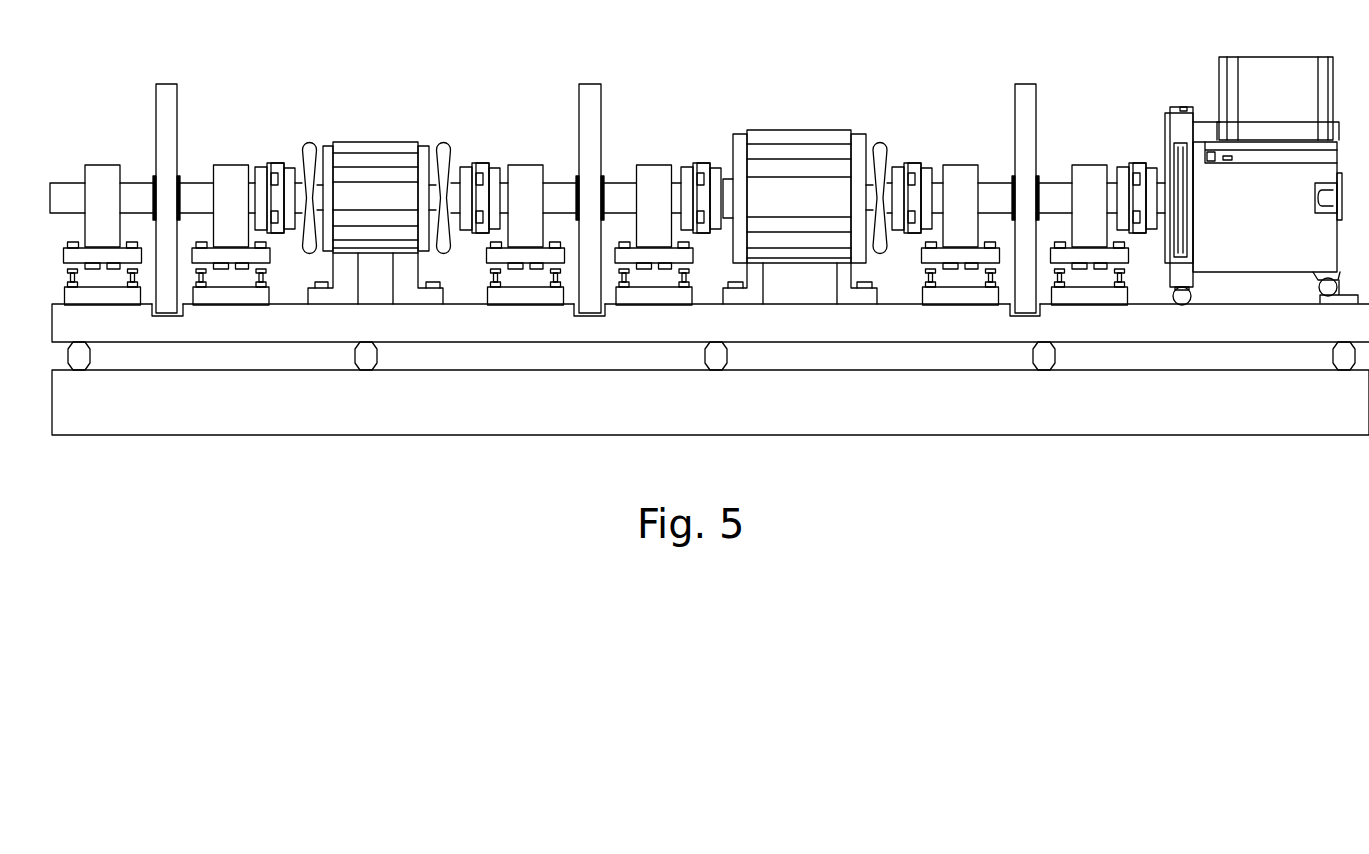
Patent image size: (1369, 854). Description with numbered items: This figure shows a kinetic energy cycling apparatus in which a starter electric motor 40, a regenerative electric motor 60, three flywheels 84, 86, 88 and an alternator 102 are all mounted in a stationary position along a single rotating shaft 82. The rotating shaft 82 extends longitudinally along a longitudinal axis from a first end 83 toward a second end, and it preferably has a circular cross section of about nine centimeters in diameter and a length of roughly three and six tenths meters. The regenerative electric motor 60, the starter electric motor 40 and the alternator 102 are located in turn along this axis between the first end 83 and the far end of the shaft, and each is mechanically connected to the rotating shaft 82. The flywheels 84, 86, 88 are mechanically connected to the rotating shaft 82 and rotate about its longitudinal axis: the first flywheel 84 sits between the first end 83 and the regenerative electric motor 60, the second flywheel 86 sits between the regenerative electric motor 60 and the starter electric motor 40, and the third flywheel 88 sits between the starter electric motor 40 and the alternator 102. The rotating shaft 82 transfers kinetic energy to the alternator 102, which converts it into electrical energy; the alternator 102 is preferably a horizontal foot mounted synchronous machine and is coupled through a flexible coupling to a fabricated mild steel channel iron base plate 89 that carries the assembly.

The starter electric motor 40 is at (793, 142).
The regenerative electric motor 60 is at (367, 153).
The rotating shaft 82 is at (560, 192).
The first end 83 is at (70, 202).
The first flywheel 84 is at (165, 112).
The second flywheel 86 is at (592, 99).
The third flywheel 88 is at (1025, 93).
The channel iron base plate 89 is at (217, 328).
The alternator 102 is at (1271, 83).